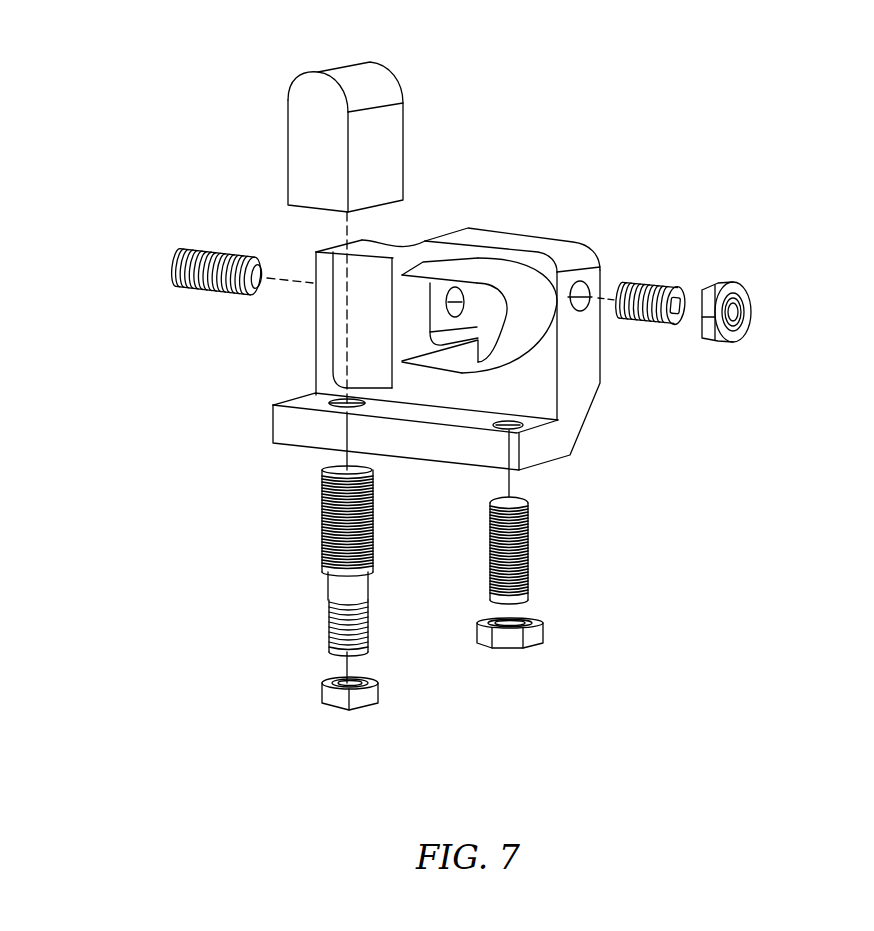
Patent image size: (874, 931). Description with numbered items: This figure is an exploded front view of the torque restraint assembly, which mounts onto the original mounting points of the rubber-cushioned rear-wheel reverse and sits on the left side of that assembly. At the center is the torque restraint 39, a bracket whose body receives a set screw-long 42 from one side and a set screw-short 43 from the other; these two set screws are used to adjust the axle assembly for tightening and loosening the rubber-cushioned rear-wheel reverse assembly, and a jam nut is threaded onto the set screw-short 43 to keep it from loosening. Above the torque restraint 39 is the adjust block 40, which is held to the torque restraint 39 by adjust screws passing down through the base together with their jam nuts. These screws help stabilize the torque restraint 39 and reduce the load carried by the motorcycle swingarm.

The torque restraint 39 is at (465, 286).
The adjust block 40 is at (218, 211).
The set screw-long 42 is at (173, 316).
The set screw-short 43 is at (708, 238).